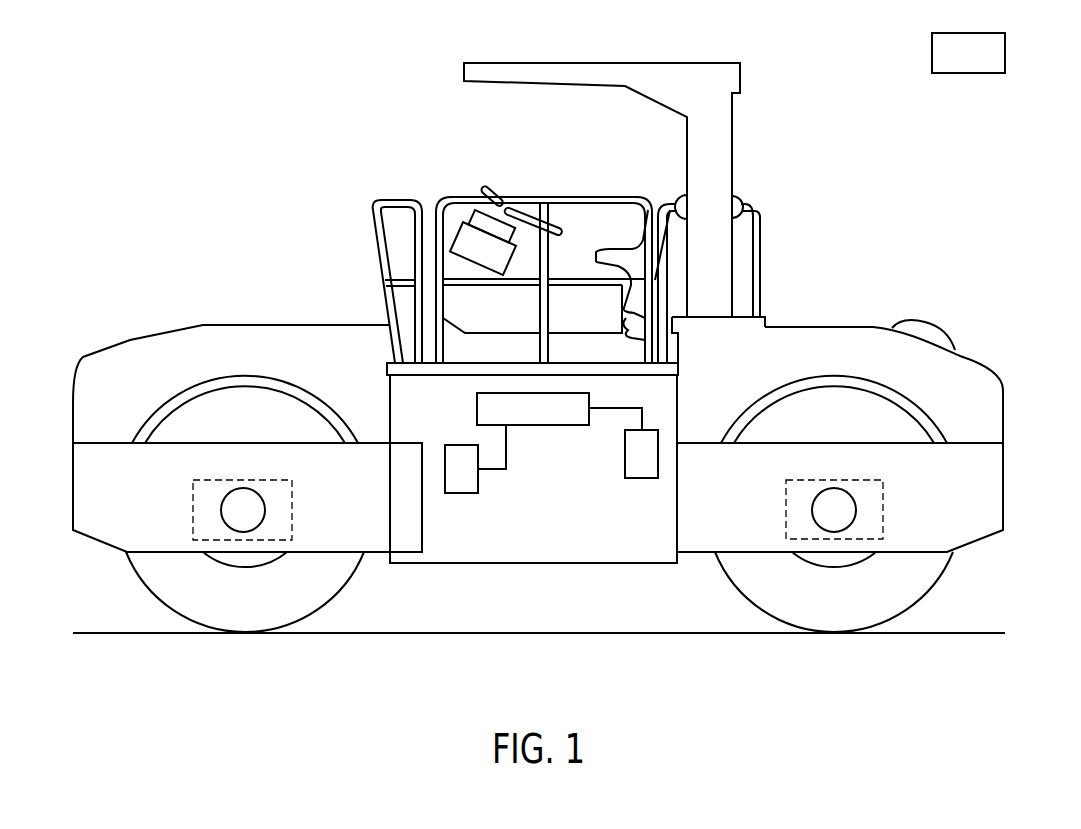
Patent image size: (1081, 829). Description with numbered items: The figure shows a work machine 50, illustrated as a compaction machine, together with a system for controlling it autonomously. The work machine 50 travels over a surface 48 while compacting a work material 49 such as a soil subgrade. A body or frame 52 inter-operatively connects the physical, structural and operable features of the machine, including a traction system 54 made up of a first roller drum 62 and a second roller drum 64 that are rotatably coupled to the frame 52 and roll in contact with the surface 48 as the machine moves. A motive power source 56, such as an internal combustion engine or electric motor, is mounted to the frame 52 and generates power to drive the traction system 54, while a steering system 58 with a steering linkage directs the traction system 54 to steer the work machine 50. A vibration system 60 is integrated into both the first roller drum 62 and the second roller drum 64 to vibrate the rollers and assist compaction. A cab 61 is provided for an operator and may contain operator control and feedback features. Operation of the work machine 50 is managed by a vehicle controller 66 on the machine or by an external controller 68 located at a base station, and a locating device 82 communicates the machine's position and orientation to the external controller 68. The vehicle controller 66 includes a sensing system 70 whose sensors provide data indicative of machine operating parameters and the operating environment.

The surface 48 is at (950, 632).
The work material 49 is at (118, 662).
The work machine 50 is at (222, 108).
The frame 52 is at (590, 547).
The traction system 54 is at (270, 603).
The motive power source 56 is at (300, 333).
The steering system 58 is at (468, 272).
The vibration system 60 is at (293, 510).
The cab 61 is at (750, 141).
The first roller drum 62 is at (168, 593).
The second roller drum 64 is at (760, 593).
The vehicle controller 66 is at (477, 410).
The external controller 68 is at (1005, 48).
The sensing system 70 is at (462, 493).
The locating device 82 is at (625, 452).